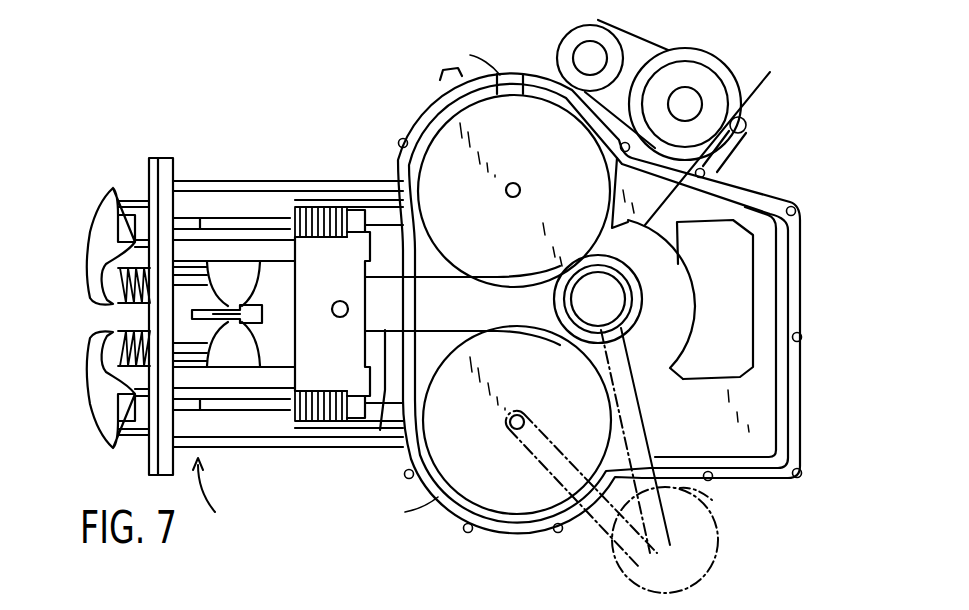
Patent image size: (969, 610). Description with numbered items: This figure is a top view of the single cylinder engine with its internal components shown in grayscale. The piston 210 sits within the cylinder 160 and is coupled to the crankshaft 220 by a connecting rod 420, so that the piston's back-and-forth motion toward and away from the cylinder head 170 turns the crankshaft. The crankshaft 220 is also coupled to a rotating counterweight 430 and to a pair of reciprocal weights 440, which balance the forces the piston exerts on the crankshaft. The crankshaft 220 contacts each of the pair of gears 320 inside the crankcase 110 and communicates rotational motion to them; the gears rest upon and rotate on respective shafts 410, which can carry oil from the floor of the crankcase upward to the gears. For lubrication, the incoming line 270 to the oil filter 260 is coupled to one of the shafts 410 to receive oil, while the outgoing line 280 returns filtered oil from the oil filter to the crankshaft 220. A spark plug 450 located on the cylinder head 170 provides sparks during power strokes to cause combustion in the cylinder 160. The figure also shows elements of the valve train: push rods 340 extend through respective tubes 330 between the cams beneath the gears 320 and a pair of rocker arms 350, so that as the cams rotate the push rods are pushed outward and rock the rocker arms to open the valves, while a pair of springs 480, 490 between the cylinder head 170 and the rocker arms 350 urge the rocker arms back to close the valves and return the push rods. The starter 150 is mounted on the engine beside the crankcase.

The crankcase 110 is at (753, 195).
The starter 150 is at (707, 52).
The cylinder 160 is at (300, 195).
The cylinder head 170 is at (225, 495).
The piston 210 is at (357, 242).
The crankshaft 220 is at (655, 362).
The oil filter 260 is at (718, 542).
The incoming line 270 is at (603, 526).
The outgoing line 280 is at (702, 497).
The gears 320 is at (430, 284).
The tubes 330 is at (238, 181).
The push rods 340 is at (378, 188).
The rocker arms 350 is at (98, 212).
The shafts 410 is at (513, 183).
The connecting rod 420 is at (376, 430).
The rotating counterweight 430 is at (729, 141).
The reciprocal weights 440 is at (753, 222).
The spark plug 450 is at (149, 304).
The spring 480 is at (112, 330).
The spring 490 is at (118, 292).